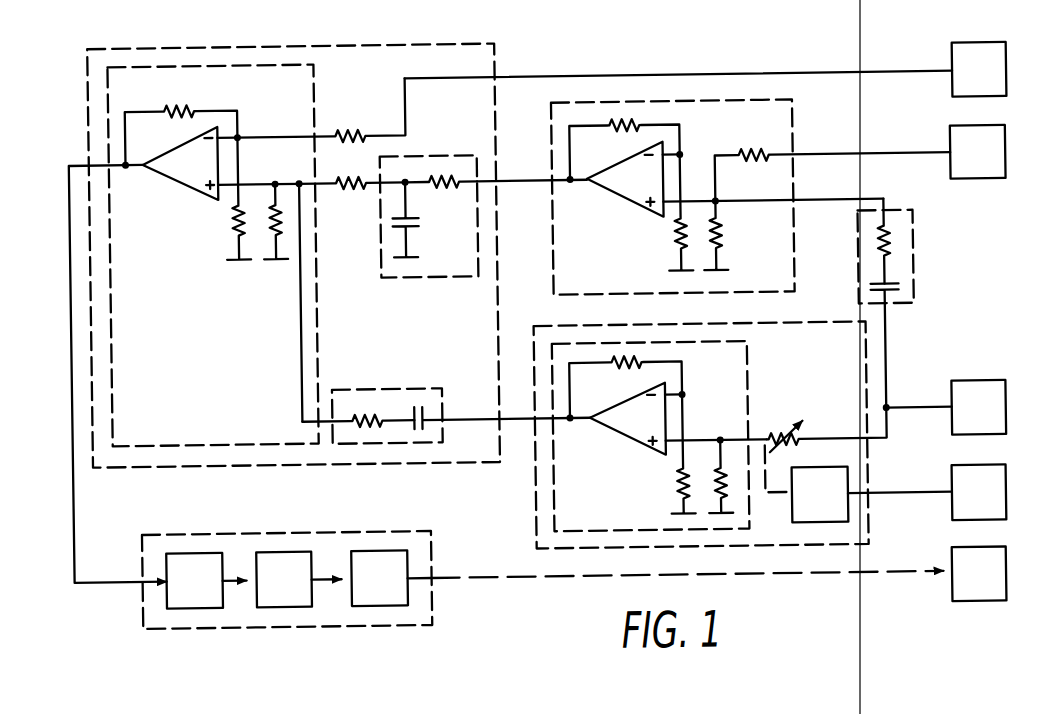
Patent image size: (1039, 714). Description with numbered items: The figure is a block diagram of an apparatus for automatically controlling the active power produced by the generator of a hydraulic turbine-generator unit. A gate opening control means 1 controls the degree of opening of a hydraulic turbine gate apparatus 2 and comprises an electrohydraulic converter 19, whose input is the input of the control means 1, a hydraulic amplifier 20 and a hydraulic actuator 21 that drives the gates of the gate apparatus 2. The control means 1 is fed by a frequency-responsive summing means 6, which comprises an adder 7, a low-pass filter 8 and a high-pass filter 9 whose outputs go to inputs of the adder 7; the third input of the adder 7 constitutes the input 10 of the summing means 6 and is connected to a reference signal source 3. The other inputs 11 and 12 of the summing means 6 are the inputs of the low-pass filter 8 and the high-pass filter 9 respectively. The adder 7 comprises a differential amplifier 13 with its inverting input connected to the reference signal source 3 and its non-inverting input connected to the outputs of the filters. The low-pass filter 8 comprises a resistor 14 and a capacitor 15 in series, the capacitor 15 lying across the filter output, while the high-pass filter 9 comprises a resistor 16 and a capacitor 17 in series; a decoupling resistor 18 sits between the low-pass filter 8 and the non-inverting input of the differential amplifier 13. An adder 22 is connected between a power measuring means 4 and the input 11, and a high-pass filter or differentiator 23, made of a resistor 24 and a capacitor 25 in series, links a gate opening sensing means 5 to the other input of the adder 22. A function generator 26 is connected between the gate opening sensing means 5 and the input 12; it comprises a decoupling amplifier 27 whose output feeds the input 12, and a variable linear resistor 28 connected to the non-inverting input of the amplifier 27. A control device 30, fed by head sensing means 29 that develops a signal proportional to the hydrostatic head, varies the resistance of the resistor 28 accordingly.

The gate opening control means 1 is at (187, 528).
The hydraulic turbine gate apparatus 2 is at (706, 577).
The reference signal source 3 is at (979, 69).
The power measuring means 4 is at (978, 152).
The gate opening sensing means 5 is at (946, 408).
The frequency-responsive summing means 6 is at (391, 43).
The adder 7 is at (320, 90).
The low-pass filter 8 is at (381, 246).
The high-pass filter 9 is at (441, 407).
The input of the summing means 10 is at (528, 76).
The input of the summing means 11 is at (512, 178).
The input of the summing means 12 is at (505, 416).
The differential amplifier 13 is at (210, 182).
The resistor 14 is at (447, 187).
The capacitor 15 is at (416, 229).
The resistor 16 is at (413, 405).
The capacitor 17 is at (360, 407).
The decoupling resistor 18 is at (350, 187).
The electrohydraulic converter 19 is at (194, 581).
The hydraulic amplifier 20 is at (284, 580).
The hydraulic actuator 21 is at (379, 578).
The adder 22 is at (797, 122).
The high-pass filter or differentiator 23 is at (916, 226).
The resistor 24 is at (880, 240).
The capacitor 25 is at (887, 305).
The function generator 26 is at (532, 536).
The decoupling amplifier 27 is at (748, 365).
The variable linear resistor 28 is at (772, 437).
The head sensing means 29 is at (979, 492).
The control device 30 is at (872, 493).